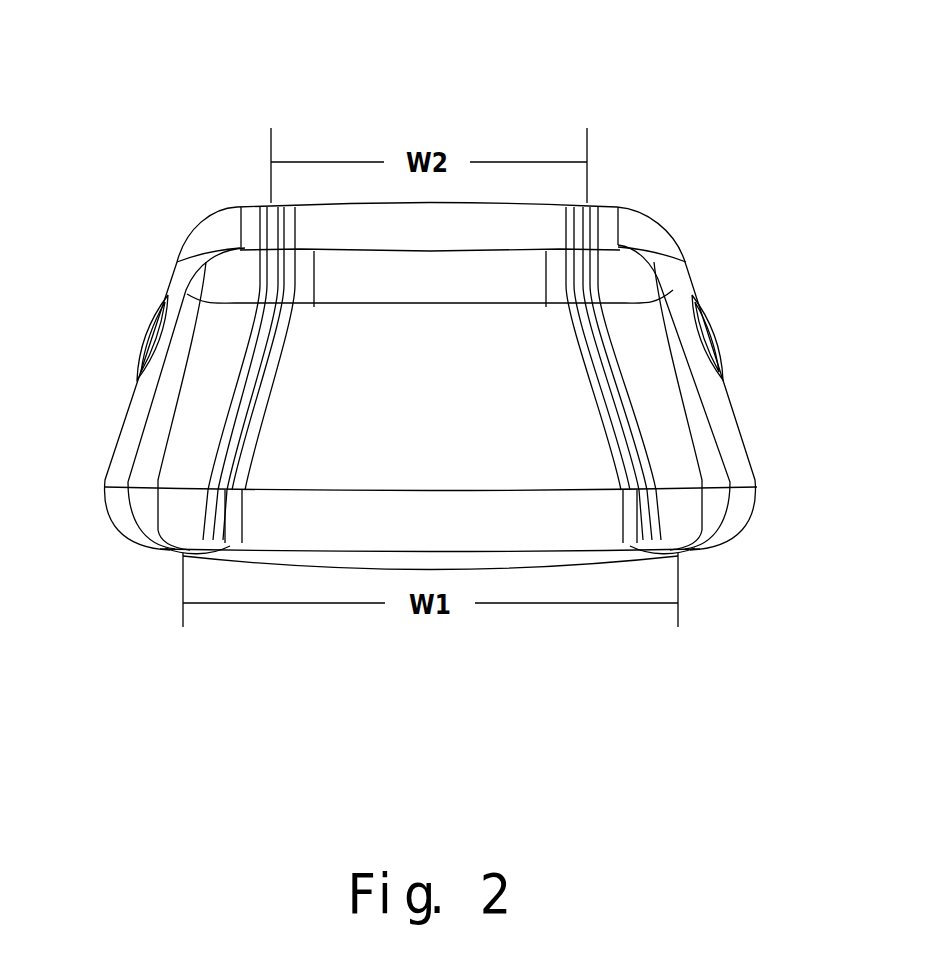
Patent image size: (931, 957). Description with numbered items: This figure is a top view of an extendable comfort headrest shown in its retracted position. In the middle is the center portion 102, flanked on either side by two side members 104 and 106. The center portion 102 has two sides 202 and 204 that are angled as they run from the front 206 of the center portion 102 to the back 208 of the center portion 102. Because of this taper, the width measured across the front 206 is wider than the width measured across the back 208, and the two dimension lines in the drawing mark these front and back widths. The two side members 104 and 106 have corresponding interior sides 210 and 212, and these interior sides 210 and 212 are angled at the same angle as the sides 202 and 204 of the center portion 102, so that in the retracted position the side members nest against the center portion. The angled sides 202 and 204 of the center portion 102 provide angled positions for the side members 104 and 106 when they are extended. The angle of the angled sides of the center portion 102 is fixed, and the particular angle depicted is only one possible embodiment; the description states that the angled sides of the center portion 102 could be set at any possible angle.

The center portion 102 is at (398, 288).
The side member 104 is at (176, 288).
The side member 106 is at (673, 288).
The side of the center portion 202 is at (270, 318).
The side of the center portion 204 is at (585, 317).
The front of the center portion 206 is at (508, 565).
The back of the center portion 208 is at (535, 203).
The interior side of the side member 210 is at (230, 490).
The interior side of the side member 212 is at (620, 487).